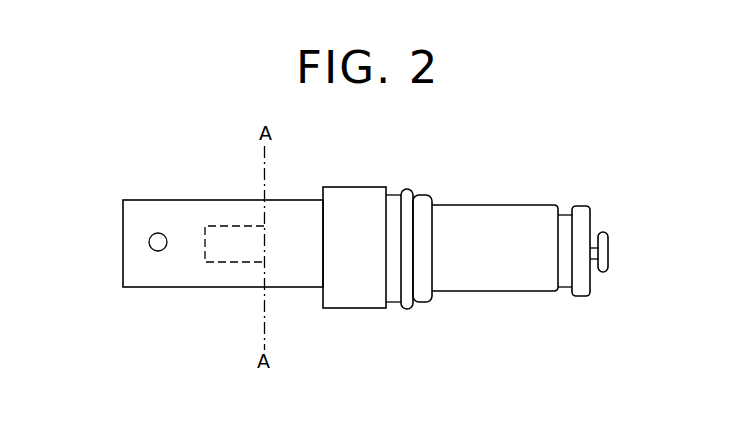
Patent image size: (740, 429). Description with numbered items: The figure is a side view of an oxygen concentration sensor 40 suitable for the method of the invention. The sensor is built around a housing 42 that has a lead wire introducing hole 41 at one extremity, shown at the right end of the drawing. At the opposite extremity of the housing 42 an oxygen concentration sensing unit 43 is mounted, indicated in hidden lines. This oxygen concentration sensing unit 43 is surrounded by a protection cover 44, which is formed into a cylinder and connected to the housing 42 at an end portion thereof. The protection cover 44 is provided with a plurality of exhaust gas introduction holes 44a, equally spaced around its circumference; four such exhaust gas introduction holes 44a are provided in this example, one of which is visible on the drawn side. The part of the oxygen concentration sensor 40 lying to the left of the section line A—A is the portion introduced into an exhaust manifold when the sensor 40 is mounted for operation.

The oxygen concentration sensor 40 is at (406, 309).
The lead wire introducing hole 41 is at (608, 255).
The housing 42 is at (370, 193).
The oxygen concentration sensing unit 43 is at (237, 227).
The protection cover 44 is at (222, 279).
The exhaust gas introduction holes 44a is at (158, 251).